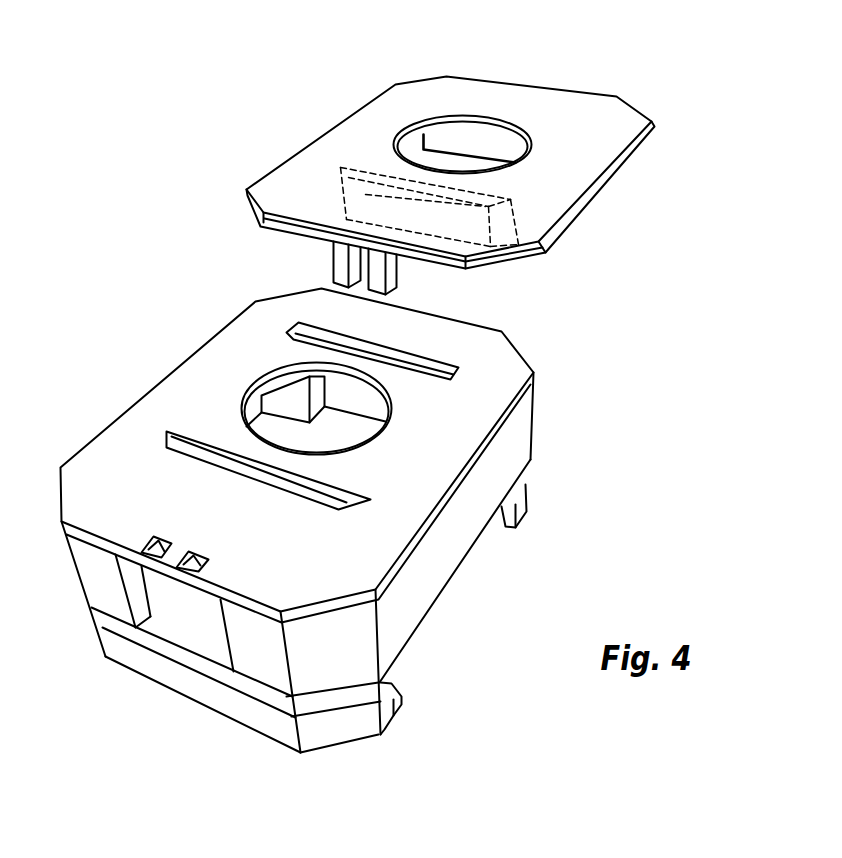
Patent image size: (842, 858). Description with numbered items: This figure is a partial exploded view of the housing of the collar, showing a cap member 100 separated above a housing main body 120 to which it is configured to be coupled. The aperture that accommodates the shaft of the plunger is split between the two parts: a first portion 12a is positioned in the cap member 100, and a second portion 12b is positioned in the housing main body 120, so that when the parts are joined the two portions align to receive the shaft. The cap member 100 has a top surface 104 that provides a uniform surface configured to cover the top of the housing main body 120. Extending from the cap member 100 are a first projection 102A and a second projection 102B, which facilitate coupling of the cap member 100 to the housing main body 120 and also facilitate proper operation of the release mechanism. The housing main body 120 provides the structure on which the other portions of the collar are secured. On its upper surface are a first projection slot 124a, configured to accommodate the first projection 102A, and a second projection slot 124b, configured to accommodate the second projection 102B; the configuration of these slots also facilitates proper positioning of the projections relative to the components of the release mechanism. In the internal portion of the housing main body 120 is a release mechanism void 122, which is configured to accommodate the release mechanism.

The cap member 100 is at (353, 88).
The top surface 104 is at (587, 157).
The first portion of aperture 12a is at (380, 142).
The second projection 102B is at (488, 140).
The first projection 102A is at (367, 195).
The housing main body 120 is at (555, 360).
The second portion of aperture 12b is at (405, 410).
The first projection slot 124a is at (193, 450).
The second projection slot 124b is at (436, 367).
The release mechanism void 122 is at (193, 613).